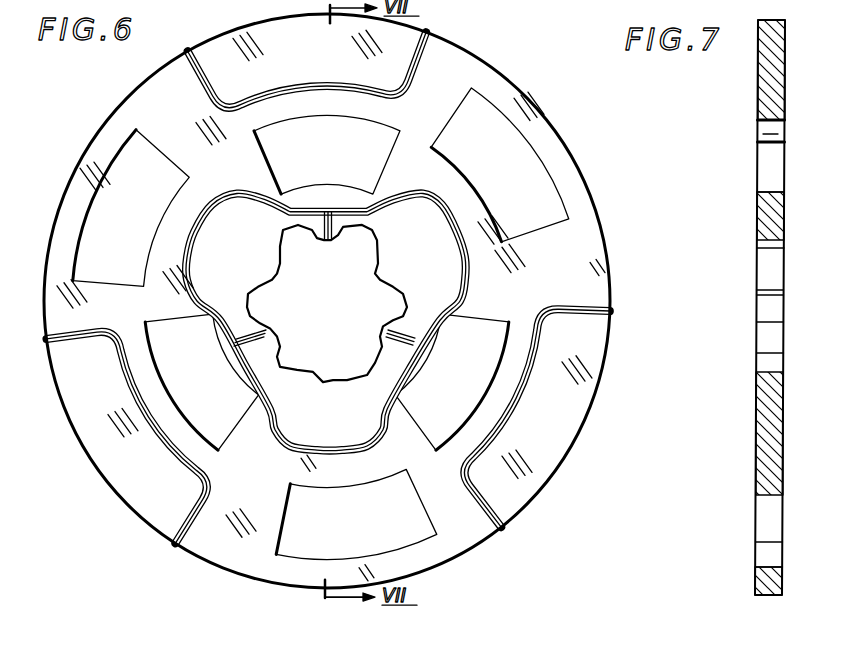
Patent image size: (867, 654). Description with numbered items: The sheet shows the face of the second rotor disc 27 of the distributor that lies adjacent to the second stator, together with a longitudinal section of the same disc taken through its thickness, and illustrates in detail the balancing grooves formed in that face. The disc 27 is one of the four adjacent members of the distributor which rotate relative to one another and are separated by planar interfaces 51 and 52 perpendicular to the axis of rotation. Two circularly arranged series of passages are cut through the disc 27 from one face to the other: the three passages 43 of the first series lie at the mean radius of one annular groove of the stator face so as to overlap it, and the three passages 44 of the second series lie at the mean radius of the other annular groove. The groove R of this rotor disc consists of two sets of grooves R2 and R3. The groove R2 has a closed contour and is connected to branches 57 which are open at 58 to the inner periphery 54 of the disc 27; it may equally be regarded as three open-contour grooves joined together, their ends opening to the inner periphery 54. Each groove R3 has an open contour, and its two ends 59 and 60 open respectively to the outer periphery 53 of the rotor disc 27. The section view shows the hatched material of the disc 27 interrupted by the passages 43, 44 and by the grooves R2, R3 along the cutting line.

In FIG. 6, the second disc 27 is at (327, 301).
In FIG. 6, the passages of the first series 43 is at (320, 324).
In FIG. 7, the passages of the first series 43 is at (762, 540).
In FIG. 6, the passages of the second series 44 is at (316, 276).
In FIG. 7, the passages of the second series 44 is at (762, 165).
In FIG. 7, the planar interface 51 is at (757, 112).
In FIG. 6, the planar interface 52 is at (150, 170).
In FIG. 7, the planar interface 52 is at (787, 107).
In FIG. 6, the outer periphery 53 is at (478, 152).
In FIG. 7, the outer periphery 53 is at (784, 19).
In FIG. 6, the inner periphery 54 is at (327, 303).
In FIG. 7, the inner periphery 54 is at (762, 275).
In FIG. 6, the branches 57 is at (324, 294).
In FIG. 6, the open ends of branches 58 is at (324, 281).
In FIG. 6, the end of groove R3 59 is at (373, 323).
In FIG. 6, the end of groove R3 60 is at (280, 306).
In FIG. 6, the groove R2 is at (326, 321).
In FIG. 7, the groove R2 is at (781, 214).
In FIG. 6, the groove R3 is at (327, 287).
In FIG. 7, the groove R3 is at (784, 92).